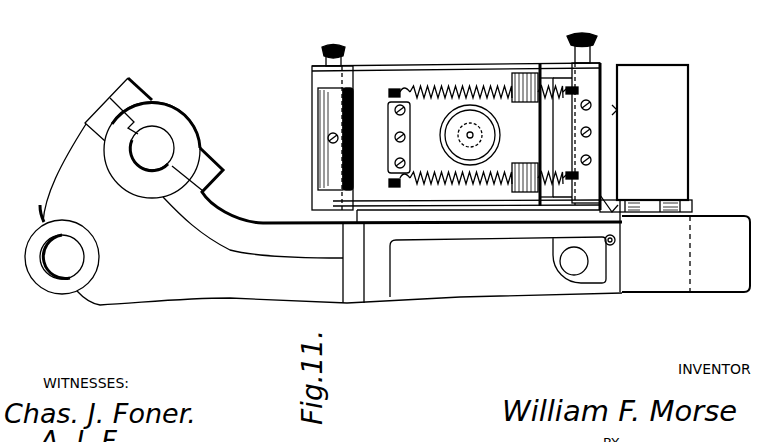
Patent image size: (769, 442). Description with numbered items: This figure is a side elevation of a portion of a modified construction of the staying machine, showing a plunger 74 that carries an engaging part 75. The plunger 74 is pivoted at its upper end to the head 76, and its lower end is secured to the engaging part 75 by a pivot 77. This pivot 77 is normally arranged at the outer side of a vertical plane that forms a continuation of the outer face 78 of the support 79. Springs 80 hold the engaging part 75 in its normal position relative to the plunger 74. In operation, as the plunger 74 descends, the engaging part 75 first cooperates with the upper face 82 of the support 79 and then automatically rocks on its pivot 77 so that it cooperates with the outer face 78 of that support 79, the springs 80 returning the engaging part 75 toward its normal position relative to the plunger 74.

The plunger 74 is at (507, 123).
The engaging part 75 is at (572, 88).
The head 76 is at (332, 122).
The pivot 77 is at (602, 107).
The outer face 78 is at (660, 160).
The support 79 is at (662, 100).
The springs 80 is at (433, 176).
The upper face 82 is at (617, 107).